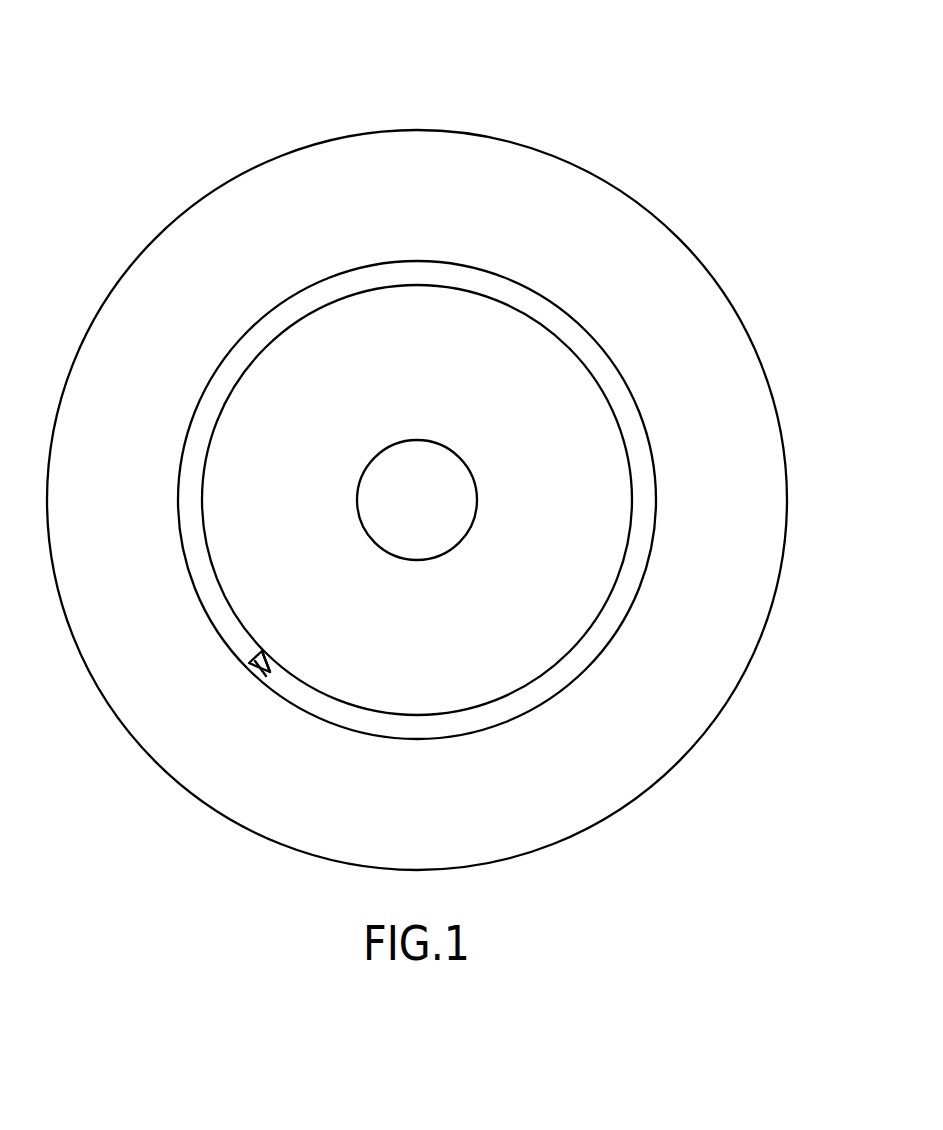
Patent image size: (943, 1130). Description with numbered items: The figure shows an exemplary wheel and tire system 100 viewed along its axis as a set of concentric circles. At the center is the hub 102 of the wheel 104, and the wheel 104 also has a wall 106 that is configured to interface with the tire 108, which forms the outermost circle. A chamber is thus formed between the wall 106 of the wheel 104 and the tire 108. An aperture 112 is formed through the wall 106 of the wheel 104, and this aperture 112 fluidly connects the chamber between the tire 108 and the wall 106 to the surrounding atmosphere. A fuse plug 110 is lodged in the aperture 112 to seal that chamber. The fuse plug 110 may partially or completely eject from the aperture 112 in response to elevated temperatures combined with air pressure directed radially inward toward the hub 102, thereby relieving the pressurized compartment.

The wheel and tire system 100 is at (120, 136).
The hub 102 is at (417, 440).
The wheel 104 is at (636, 440).
The wall 106 is at (652, 448).
The tire 108 is at (624, 190).
The fuse plug 110 is at (263, 673).
The aperture 112 is at (248, 663).